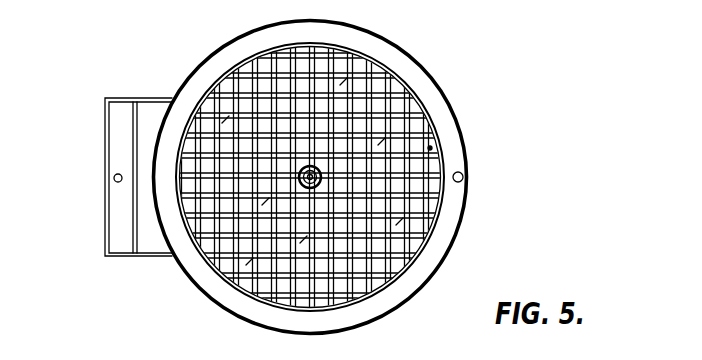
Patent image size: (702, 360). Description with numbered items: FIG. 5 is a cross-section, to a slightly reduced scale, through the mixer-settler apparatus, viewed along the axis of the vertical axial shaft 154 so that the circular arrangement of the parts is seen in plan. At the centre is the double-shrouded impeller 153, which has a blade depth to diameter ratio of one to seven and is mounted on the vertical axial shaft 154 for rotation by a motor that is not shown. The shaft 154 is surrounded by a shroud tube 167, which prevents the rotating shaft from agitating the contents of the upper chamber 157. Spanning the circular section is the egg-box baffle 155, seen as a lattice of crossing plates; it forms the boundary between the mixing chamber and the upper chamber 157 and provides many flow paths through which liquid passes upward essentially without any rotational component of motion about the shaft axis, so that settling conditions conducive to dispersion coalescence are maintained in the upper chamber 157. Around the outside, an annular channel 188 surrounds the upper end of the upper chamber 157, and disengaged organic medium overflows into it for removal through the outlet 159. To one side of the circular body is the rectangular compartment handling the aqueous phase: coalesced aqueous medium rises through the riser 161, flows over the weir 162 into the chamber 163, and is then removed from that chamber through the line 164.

The double-shrouded impeller 153 is at (318, 208).
The vertical axial shaft 154 is at (440, 167).
The egg-box baffle 155 is at (415, 108).
The upper chamber 157 is at (431, 148).
The outlet 159 is at (462, 181).
The riser 161 is at (151, 112).
The weir 162 is at (135, 248).
The chamber 163 is at (118, 220).
The line 164 is at (114, 176).
The shroud tube 167 is at (313, 179).
The annular channel 188 is at (199, 270).